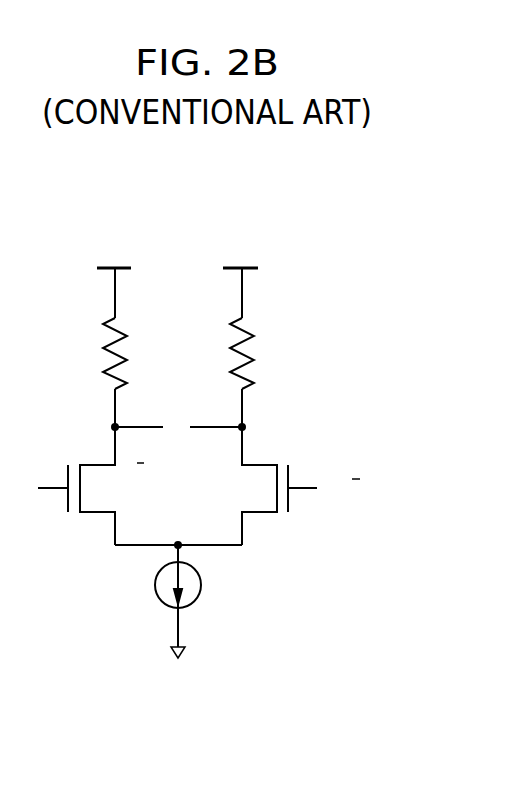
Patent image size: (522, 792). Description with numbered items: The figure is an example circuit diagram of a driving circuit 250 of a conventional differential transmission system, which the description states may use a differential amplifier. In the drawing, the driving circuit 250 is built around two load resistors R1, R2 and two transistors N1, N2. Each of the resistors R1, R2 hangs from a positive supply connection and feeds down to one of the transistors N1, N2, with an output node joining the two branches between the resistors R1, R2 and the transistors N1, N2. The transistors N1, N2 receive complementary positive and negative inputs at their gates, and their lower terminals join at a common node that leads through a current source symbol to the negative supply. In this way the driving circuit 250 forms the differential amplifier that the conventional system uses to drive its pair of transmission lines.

The driving circuit 250 is at (242, 228).
The first load resistor R1 is at (128, 353).
The second load resistor R2 is at (256, 353).
The first NMOS input transistor N1 is at (83, 486).
The second NMOS input transistor N2 is at (272, 486).